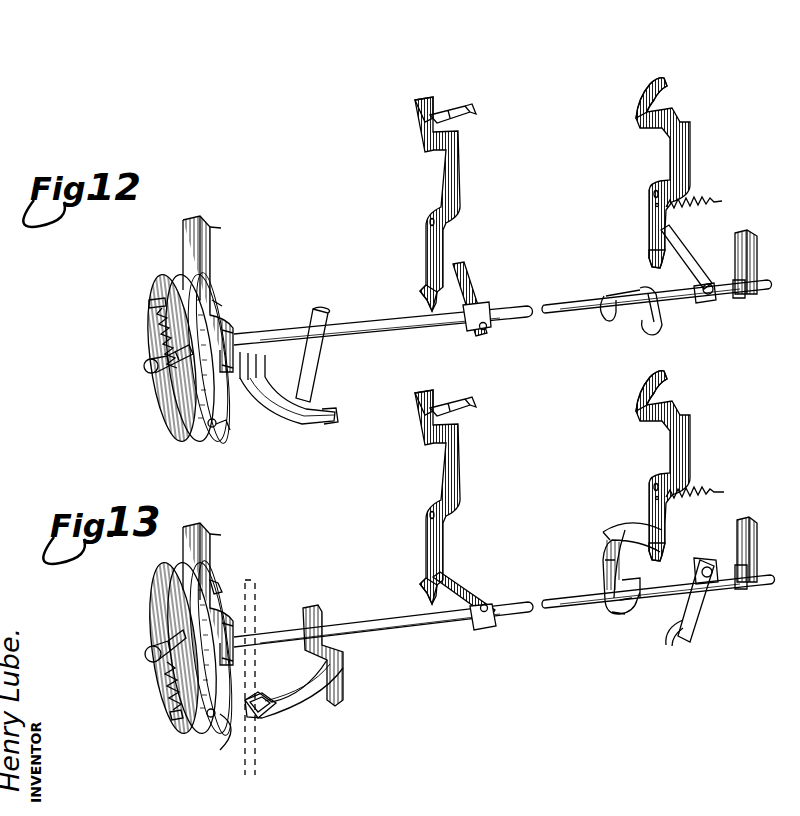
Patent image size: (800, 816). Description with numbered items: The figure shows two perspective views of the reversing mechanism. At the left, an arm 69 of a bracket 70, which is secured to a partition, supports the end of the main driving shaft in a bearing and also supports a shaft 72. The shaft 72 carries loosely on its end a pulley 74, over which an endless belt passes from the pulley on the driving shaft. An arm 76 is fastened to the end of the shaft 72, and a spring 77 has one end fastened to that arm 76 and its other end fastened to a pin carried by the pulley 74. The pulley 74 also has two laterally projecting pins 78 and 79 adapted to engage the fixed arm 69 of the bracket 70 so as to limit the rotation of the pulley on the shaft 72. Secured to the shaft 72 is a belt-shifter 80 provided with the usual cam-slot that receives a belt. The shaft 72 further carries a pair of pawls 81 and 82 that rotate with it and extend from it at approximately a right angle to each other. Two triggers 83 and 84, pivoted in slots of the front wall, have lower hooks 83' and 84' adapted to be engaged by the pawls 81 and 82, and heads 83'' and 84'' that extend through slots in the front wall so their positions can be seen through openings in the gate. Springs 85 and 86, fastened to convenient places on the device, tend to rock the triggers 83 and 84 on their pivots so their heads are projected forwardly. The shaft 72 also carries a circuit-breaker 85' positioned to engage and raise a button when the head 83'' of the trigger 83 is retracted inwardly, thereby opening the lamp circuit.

In FIG. 13, the arm 69 is at (204, 536).
In FIG. 13, the bracket 70 is at (221, 591).
In FIG. 12, the shaft 72 is at (583, 284).
In FIG. 13, the shaft 72 is at (582, 600).
In FIG. 12, the pulley 74 is at (182, 429).
In FIG. 12, the arm 76 is at (166, 373).
In FIG. 13, the arm 76 is at (172, 633).
In FIG. 12, the spring 77 is at (162, 334).
In FIG. 13, the spring 77 is at (178, 692).
In FIG. 12, the laterally projecting pin 78 is at (206, 283).
In FIG. 13, the laterally projecting pin 78 is at (228, 745).
In FIG. 12, the laterally projecting pin 79 is at (228, 427).
In FIG. 12, the belt-shifter 80 is at (322, 425).
In FIG. 13, the belt-shifter 80 is at (344, 673).
In FIG. 12, the pawl 81 is at (686, 262).
In FIG. 13, the pawl 81 is at (688, 616).
In FIG. 12, the pawl 82 is at (470, 293).
In FIG. 13, the pawl 82 is at (456, 594).
In FIG. 12, the trigger 83 is at (663, 173).
In FIG. 13, the trigger 83 is at (685, 466).
In FIG. 12, the lower hook 83' is at (638, 261).
In FIG. 13, the lower hook 83' is at (686, 537).
In FIG. 12, the head 83'' is at (678, 88).
In FIG. 13, the head 83'' is at (681, 385).
In FIG. 12, the trigger 84 is at (460, 204).
In FIG. 13, the trigger 84 is at (459, 497).
In FIG. 12, the lower hook 84' is at (410, 298).
In FIG. 13, the lower hook 84' is at (410, 593).
In FIG. 12, the head 84'' is at (441, 91).
In FIG. 13, the head 84'' is at (451, 389).
In FIG. 12, the spring 85 is at (714, 188).
In FIG. 13, the spring 85 is at (729, 490).
In FIG. 12, the circuit-breaker 85' is at (628, 330).
In FIG. 13, the circuit-breaker 85' is at (629, 557).
In FIG. 12, the spring 86 is at (469, 118).
In FIG. 13, the spring 86 is at (470, 408).